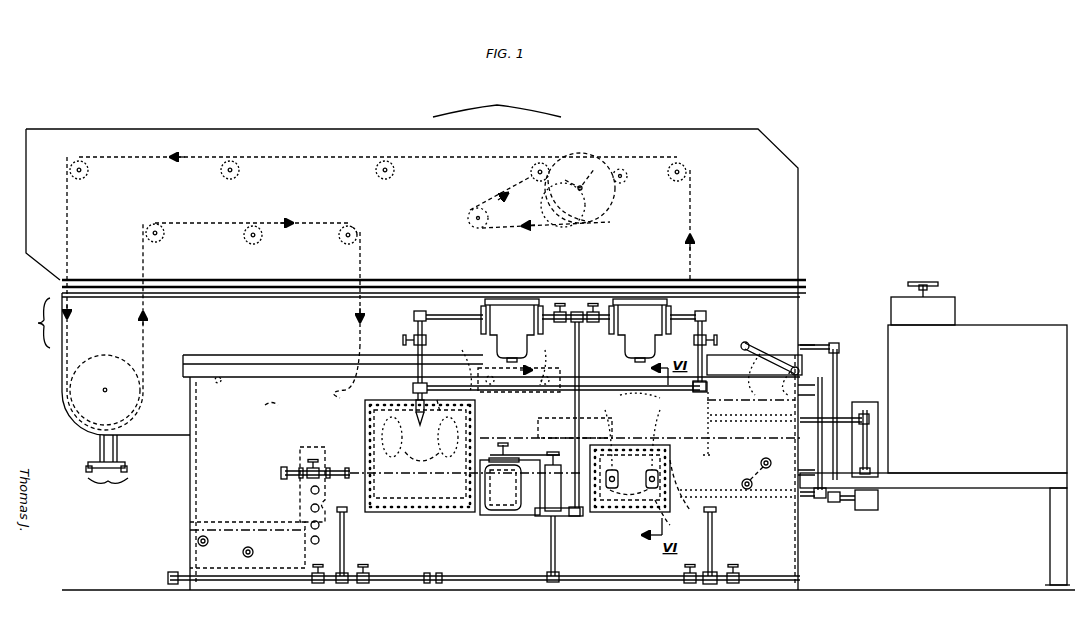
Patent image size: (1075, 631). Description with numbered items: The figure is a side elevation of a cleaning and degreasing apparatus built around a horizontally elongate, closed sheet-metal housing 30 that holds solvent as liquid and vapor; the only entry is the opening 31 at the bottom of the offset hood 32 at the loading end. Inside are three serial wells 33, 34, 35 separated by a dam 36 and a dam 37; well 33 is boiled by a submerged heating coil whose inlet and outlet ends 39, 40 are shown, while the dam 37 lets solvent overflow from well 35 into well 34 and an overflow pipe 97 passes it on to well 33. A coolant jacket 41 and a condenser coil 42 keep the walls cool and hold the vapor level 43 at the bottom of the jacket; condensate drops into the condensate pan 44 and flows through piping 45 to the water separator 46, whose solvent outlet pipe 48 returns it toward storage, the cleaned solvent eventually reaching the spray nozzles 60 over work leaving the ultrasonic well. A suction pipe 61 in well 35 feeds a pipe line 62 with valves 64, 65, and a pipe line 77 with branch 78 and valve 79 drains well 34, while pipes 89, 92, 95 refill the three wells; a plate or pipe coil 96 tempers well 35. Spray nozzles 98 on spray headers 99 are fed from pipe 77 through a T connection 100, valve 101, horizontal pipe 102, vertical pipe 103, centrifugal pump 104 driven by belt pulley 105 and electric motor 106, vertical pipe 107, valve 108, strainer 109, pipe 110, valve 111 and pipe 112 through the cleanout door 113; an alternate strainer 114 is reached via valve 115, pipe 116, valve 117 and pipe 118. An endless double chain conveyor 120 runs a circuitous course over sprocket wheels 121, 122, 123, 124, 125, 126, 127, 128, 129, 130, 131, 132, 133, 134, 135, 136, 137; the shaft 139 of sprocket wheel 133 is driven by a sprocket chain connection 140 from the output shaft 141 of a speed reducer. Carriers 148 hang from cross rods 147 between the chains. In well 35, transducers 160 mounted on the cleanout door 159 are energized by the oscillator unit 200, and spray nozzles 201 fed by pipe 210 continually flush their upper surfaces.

The housing 30 is at (416, 338).
The opening 31 is at (62, 379).
The offset hood 32 is at (31, 323).
The well 33 is at (568, 483).
The well 34 is at (430, 460).
The well 35 is at (640, 428).
The dam 36 is at (312, 445).
The dam 37 is at (562, 424).
The heating coil inlet end 39 is at (203, 536).
The heating coil outlet end 40 is at (248, 547).
The jacket 41 is at (285, 355).
The condenser coil 42 is at (762, 352).
The vapor level 43 is at (252, 385).
The condensate pan 44 is at (738, 410).
The piping 45 is at (802, 428).
The water separator 46 is at (862, 402).
The solvent outlet pipe 48 is at (845, 510).
The spray nozzles 60 is at (747, 405).
The suction pipe 61 is at (713, 541).
The pipe line 62 is at (606, 576).
The valve 64 is at (694, 563).
The valve 65 is at (734, 568).
The pipe line 77 is at (345, 537).
The branch 78 is at (283, 581).
The valve 79 is at (319, 584).
The pipe 89 is at (264, 408).
The pipe 92 is at (430, 383).
The pipe 95 is at (640, 399).
The plate or pipe coil 96 is at (753, 482).
The overflow pipe 97 is at (300, 462).
The spray nozzles 98 is at (420, 443).
The spray headers 99 is at (414, 400).
The T connection 100 is at (343, 584).
The valve 101 is at (365, 565).
The horizontal pipe 102 is at (412, 583).
The vertical pipe 103 is at (551, 551).
The centrifugal pump 104 is at (540, 516).
The belt pulley 105 is at (518, 457).
The electric motor 106 is at (503, 487).
The vertical pipe 107 is at (574, 398).
The valve 108 is at (561, 303).
The strainer 109 is at (512, 330).
The pipe 110 is at (452, 316).
The valve 111 is at (402, 340).
The pipe 112 is at (417, 367).
The cleanout door 113 is at (432, 512).
The alternate strainer 114 is at (640, 330).
The valve 115 is at (594, 303).
The pipe 116 is at (700, 314).
The valve 117 is at (716, 340).
The pipe 118 is at (596, 386).
The endless double chain conveyor 120 is at (308, 157).
The sprocket wheel 121 is at (97, 360).
The sprocket wheel 122 is at (253, 284).
The sprocket wheel 123 is at (244, 236).
The sprocket wheel 124 is at (339, 237).
The sprocket wheel 125 is at (340, 371).
The sprocket wheel 126 is at (466, 365).
The sprocket wheel 127 is at (519, 388).
The sprocket wheel 128 is at (551, 362).
The sprocket wheel 129 is at (612, 436).
The sprocket wheel 130 is at (660, 436).
The sprocket wheel 131 is at (675, 181).
The sprocket wheel 132 is at (622, 185).
The sprocket wheel 133 is at (590, 160).
The sprocket wheel 134 is at (531, 174).
The sprocket wheel 135 is at (376, 170).
The sprocket wheel 136 is at (221, 170).
The sprocket wheel 137 is at (88, 173).
The shaft 139 is at (566, 164).
The sprocket chain connection 140 is at (551, 203).
The output shaft 141 is at (468, 221).
The cross rods 147 is at (103, 432).
The carriers 148 is at (369, 476).
The cleanout door 159 is at (672, 517).
The transducers 160 is at (622, 514).
The oscillator unit 200 is at (935, 433).
The spray nozzles 201 is at (632, 452).
The pipe 210 is at (800, 451).